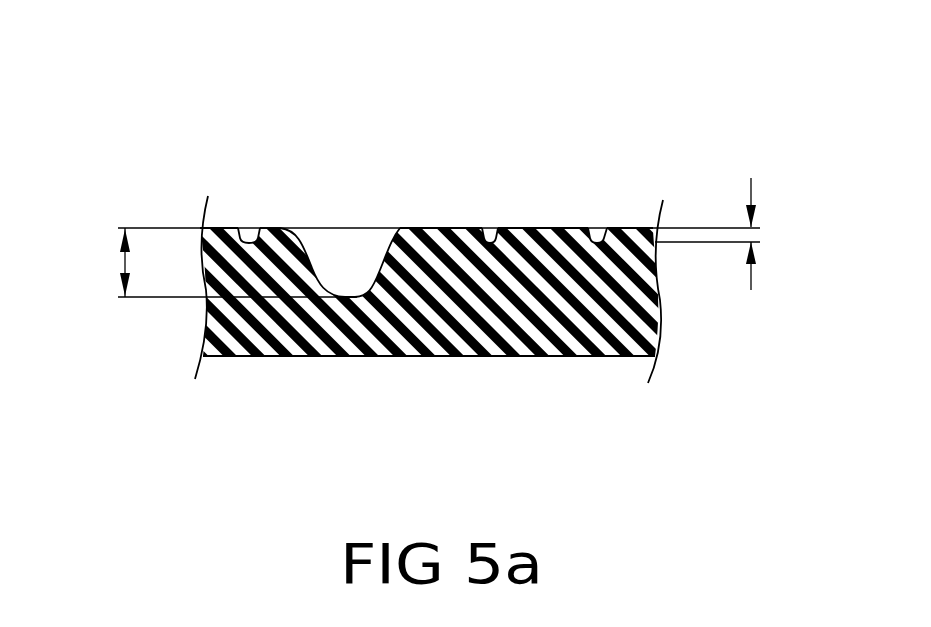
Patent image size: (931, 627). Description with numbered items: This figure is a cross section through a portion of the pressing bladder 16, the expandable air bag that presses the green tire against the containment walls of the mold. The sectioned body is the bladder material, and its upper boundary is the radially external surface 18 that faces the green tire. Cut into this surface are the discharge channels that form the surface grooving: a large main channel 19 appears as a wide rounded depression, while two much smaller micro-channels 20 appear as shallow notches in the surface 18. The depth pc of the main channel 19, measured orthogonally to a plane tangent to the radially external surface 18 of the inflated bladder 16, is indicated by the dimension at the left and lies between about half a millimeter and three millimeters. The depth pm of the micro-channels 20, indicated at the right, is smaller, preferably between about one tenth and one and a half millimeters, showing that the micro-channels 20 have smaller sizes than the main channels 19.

The pressing bladder 16 is at (573, 372).
The radially external surface 18 is at (430, 228).
The main channel 19 is at (345, 255).
The micro-channel 20 is at (490, 228).
The depth of main channel pc is at (122, 262).
The depth of micro-channel pm is at (752, 189).